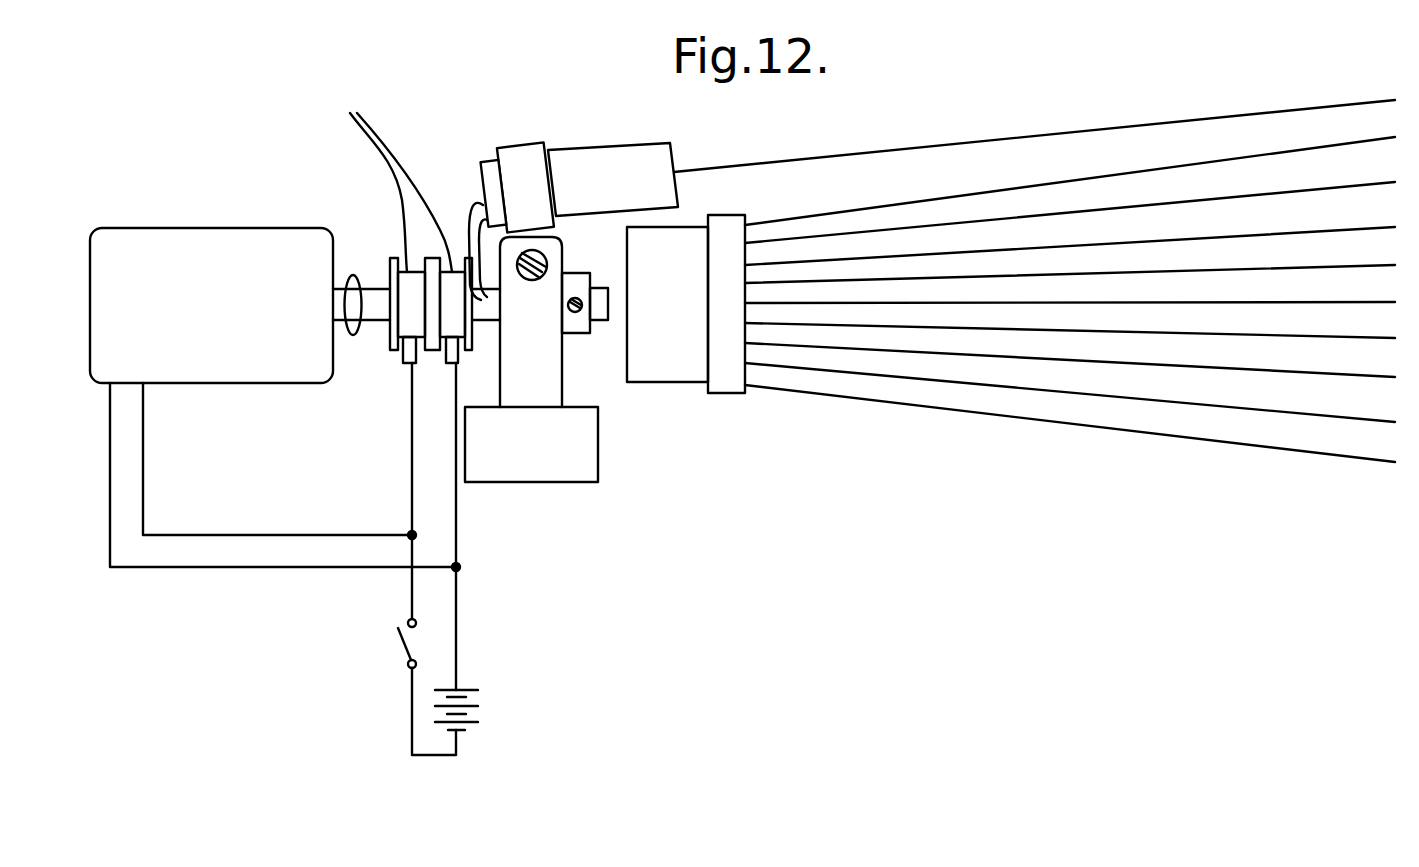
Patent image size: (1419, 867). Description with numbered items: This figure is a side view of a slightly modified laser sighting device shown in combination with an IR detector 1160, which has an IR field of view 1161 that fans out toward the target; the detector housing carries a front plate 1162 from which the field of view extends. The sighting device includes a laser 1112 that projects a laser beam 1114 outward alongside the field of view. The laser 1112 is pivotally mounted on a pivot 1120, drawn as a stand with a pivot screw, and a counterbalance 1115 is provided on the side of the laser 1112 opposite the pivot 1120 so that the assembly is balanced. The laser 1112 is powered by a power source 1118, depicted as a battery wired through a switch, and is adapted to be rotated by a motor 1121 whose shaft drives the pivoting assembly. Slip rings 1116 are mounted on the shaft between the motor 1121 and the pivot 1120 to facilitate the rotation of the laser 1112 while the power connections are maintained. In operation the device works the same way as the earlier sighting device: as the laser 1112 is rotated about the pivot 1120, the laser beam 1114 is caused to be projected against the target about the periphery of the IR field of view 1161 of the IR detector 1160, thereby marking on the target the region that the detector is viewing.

The motor 1121 is at (185, 227).
The slip rings 1116 is at (406, 221).
The IR detector 1160 is at (545, 133).
The laser 1112 is at (652, 143).
The laser beam 1114 is at (1000, 138).
The pivot 1120 is at (532, 280).
The counterbalance 1115 is at (585, 482).
The I.R. detector 1162 is at (738, 393).
The IR field of view 1161 is at (1145, 432).
The power source 1118 is at (478, 722).